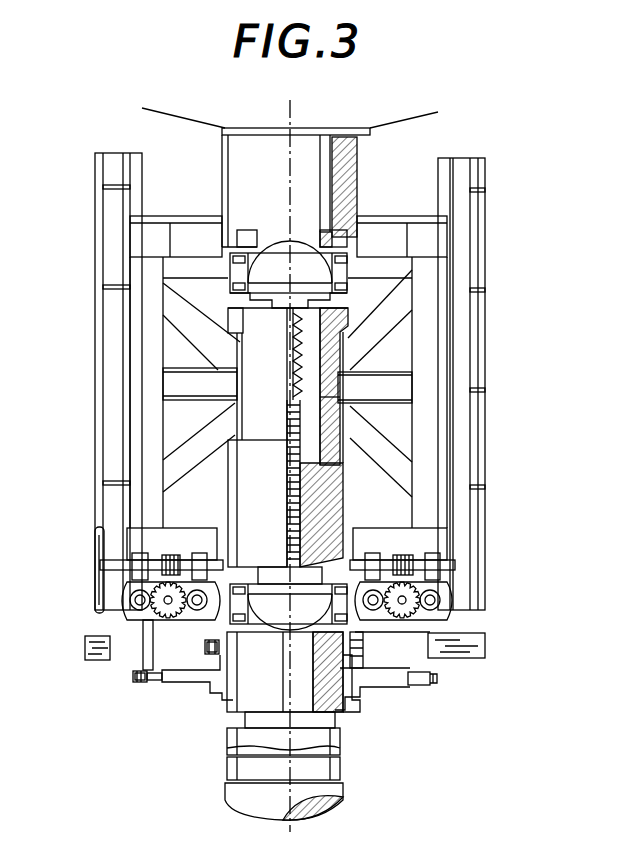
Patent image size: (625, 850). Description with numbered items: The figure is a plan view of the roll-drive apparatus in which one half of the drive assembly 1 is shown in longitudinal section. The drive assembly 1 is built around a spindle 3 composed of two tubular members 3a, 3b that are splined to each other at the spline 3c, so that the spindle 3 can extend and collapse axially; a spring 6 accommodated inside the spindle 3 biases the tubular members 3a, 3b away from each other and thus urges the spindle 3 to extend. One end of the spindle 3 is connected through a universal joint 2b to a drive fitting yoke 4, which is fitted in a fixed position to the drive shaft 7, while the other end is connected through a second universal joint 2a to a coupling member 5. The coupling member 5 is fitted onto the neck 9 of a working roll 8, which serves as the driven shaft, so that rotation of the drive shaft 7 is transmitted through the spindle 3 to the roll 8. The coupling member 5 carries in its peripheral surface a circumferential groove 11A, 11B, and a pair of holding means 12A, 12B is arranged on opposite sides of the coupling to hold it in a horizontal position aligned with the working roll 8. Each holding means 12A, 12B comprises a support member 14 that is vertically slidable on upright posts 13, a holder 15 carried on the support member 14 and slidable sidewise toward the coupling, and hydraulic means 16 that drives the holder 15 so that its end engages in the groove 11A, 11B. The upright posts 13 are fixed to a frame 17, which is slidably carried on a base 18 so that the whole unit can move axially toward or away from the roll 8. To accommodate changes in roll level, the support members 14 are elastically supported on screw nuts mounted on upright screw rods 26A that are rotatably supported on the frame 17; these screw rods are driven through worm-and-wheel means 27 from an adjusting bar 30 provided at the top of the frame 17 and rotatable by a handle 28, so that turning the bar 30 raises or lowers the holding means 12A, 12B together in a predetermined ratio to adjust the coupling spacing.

The drive assembly 1 is at (223, 482).
The universal joint 2a is at (270, 605).
The universal joint 2b is at (347, 280).
The spindle 3 is at (320, 440).
The tubular member 3a is at (318, 503).
The tubular member 3b is at (340, 364).
The spline 3c is at (326, 397).
The drive fitting yoke 4 is at (348, 198).
The coupling member 5 is at (347, 714).
The spring 6 is at (299, 392).
The drive shaft 7 is at (322, 166).
The working roll 8 is at (344, 797).
The neck 9 is at (305, 690).
The circumferential groove 11A is at (218, 690).
The circumferential groove 11B is at (203, 705).
The holding means 12A is at (146, 688).
The holding means 12B is at (141, 720).
The upright post 13 is at (147, 612).
The support member 14 is at (152, 627).
The holder 15 is at (218, 683).
The hydraulic means 16 is at (85, 655).
The frame 17 is at (150, 424).
The base 18 is at (95, 364).
The upper screw rod 26A is at (170, 618).
The worm-and-wheel means 27 is at (166, 570).
The handle 28 is at (96, 566).
The adjusting bar 30 is at (214, 561).